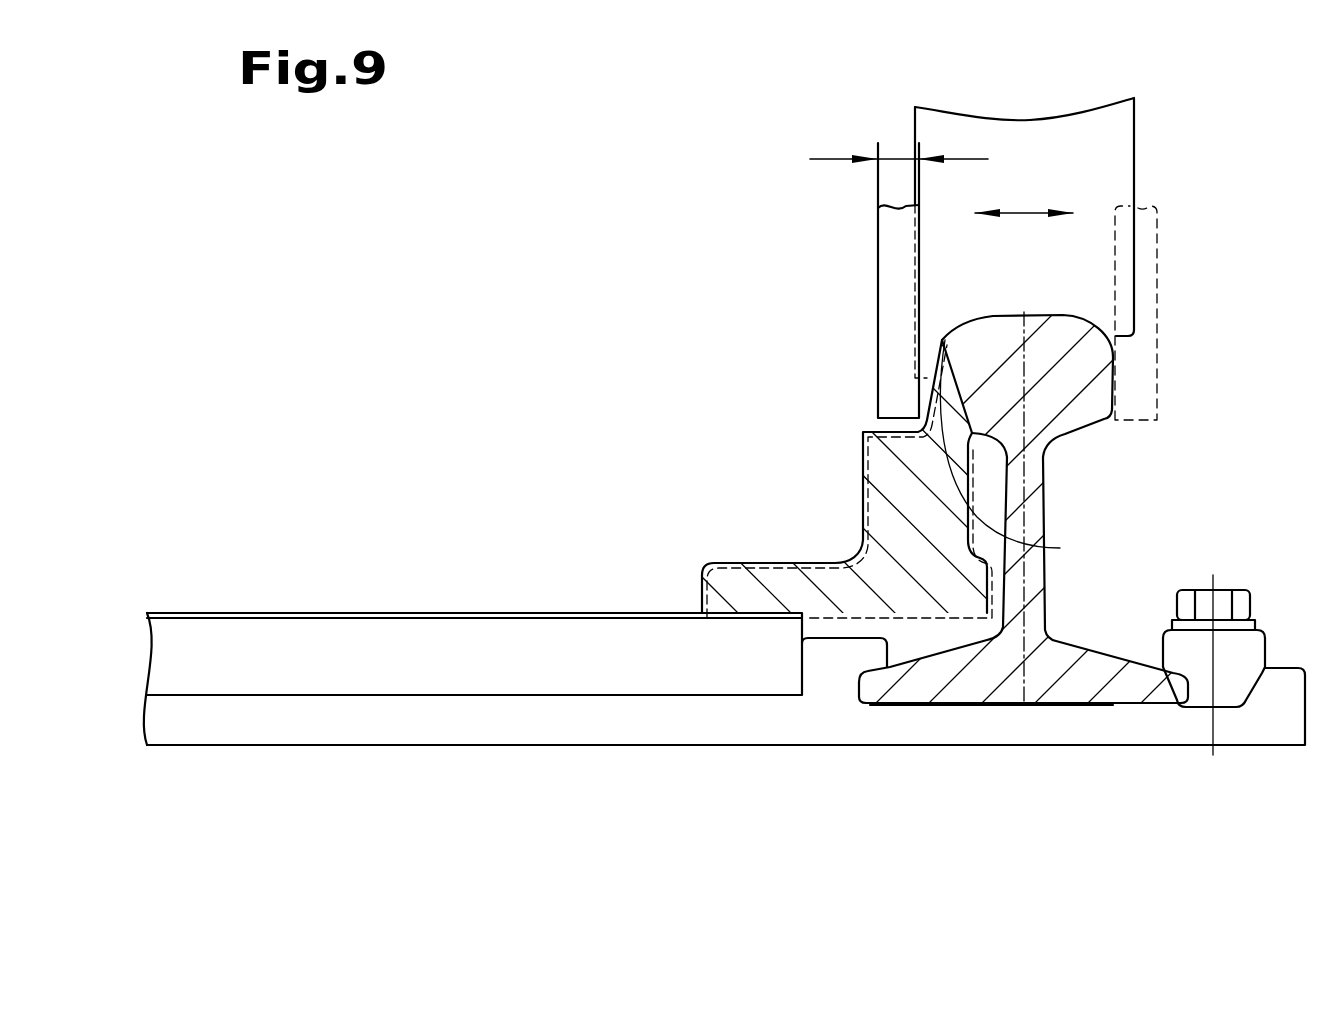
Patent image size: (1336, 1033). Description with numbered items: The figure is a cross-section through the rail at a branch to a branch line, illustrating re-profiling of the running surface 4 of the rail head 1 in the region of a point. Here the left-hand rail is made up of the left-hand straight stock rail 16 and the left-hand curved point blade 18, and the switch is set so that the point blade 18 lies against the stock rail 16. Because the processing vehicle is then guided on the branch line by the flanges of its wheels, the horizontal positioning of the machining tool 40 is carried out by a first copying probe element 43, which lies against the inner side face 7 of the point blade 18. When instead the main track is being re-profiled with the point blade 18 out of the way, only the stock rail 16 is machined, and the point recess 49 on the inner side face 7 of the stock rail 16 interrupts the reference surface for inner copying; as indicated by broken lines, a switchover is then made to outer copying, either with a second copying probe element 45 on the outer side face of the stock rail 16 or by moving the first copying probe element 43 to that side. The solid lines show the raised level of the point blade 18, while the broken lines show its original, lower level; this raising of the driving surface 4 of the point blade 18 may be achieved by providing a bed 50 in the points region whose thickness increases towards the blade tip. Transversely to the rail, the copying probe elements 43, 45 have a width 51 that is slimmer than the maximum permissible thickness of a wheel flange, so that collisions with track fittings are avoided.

The rail head 1 is at (999, 507).
The left-hand straight stock rail 16 is at (1043, 353).
The running surface 4 is at (983, 313).
The inner side face 7 is at (938, 339).
The left-hand curved point blade 18 is at (892, 530).
The machining tool 40 is at (1107, 125).
The first copying probe element 43 is at (883, 238).
The second copying probe element 45 is at (1145, 280).
The point recess 49 is at (1060, 548).
The bed 50 is at (455, 613).
The width 51 is at (900, 160).